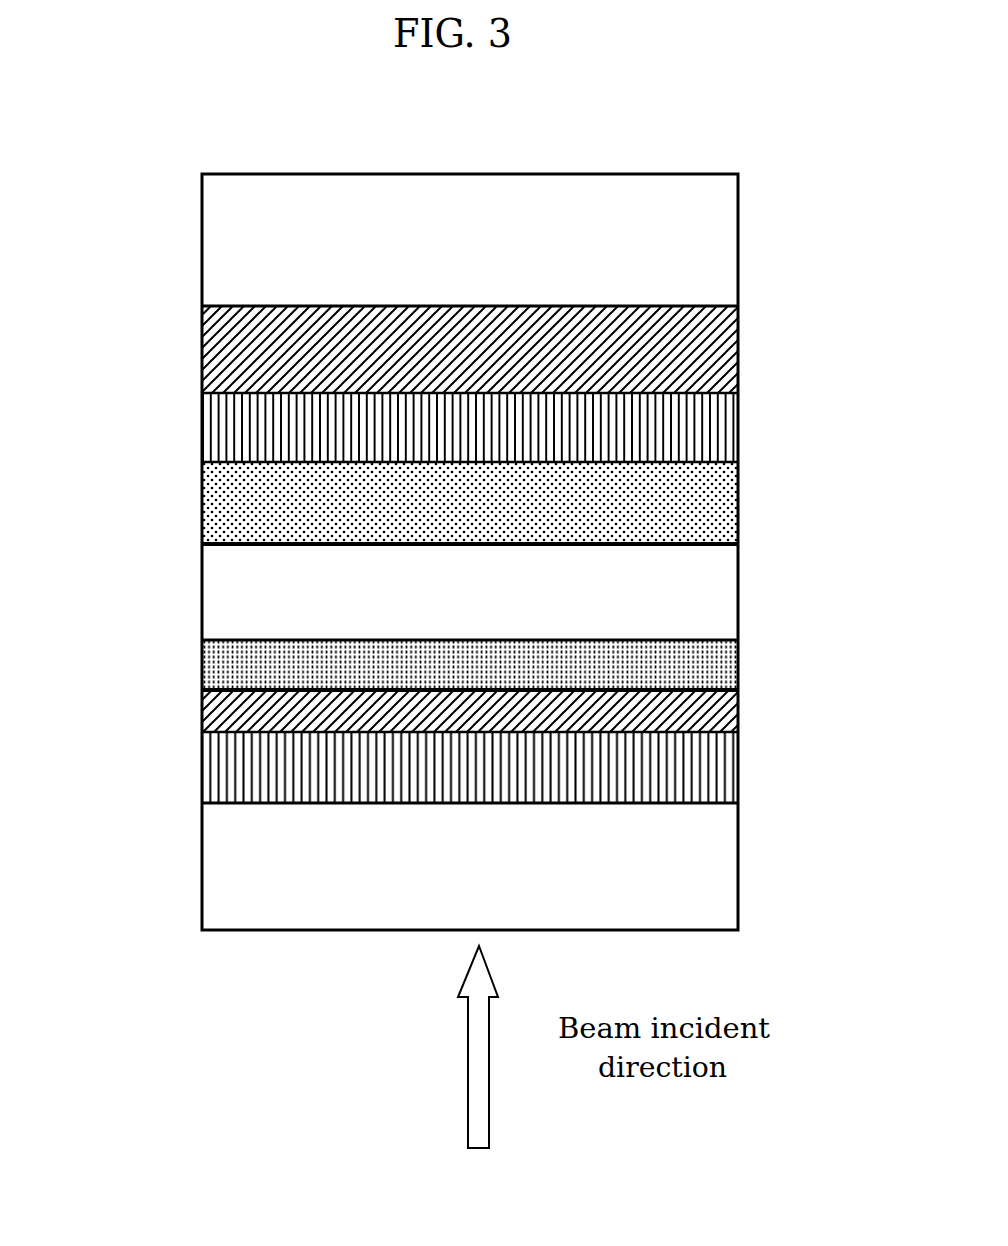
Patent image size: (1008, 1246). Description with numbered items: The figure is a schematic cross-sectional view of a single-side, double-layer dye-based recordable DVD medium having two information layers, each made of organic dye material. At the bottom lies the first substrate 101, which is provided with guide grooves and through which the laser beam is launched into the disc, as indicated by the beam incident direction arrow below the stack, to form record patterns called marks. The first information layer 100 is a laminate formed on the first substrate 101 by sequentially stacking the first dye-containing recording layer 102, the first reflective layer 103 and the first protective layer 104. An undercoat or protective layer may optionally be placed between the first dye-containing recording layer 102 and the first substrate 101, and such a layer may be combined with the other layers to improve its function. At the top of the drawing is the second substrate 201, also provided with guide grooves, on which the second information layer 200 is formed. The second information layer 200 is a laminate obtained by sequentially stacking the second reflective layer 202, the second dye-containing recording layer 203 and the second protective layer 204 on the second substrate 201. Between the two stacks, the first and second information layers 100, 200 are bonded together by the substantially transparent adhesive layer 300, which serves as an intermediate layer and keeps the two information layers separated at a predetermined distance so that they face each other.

The first information layer 100 is at (476, 720).
The first substrate 101 is at (708, 865).
The first dye-containing recording layer 102 is at (708, 767).
The first reflective layer 103 is at (738, 693).
The first protective layer 104 is at (738, 666).
The second information layer 200 is at (473, 425).
The second substrate 201 is at (708, 244).
The second reflective layer 202 is at (738, 350).
The second dye-containing recording layer 203 is at (708, 427).
The second protective layer 204 is at (708, 483).
The adhesive layer 300 is at (708, 576).